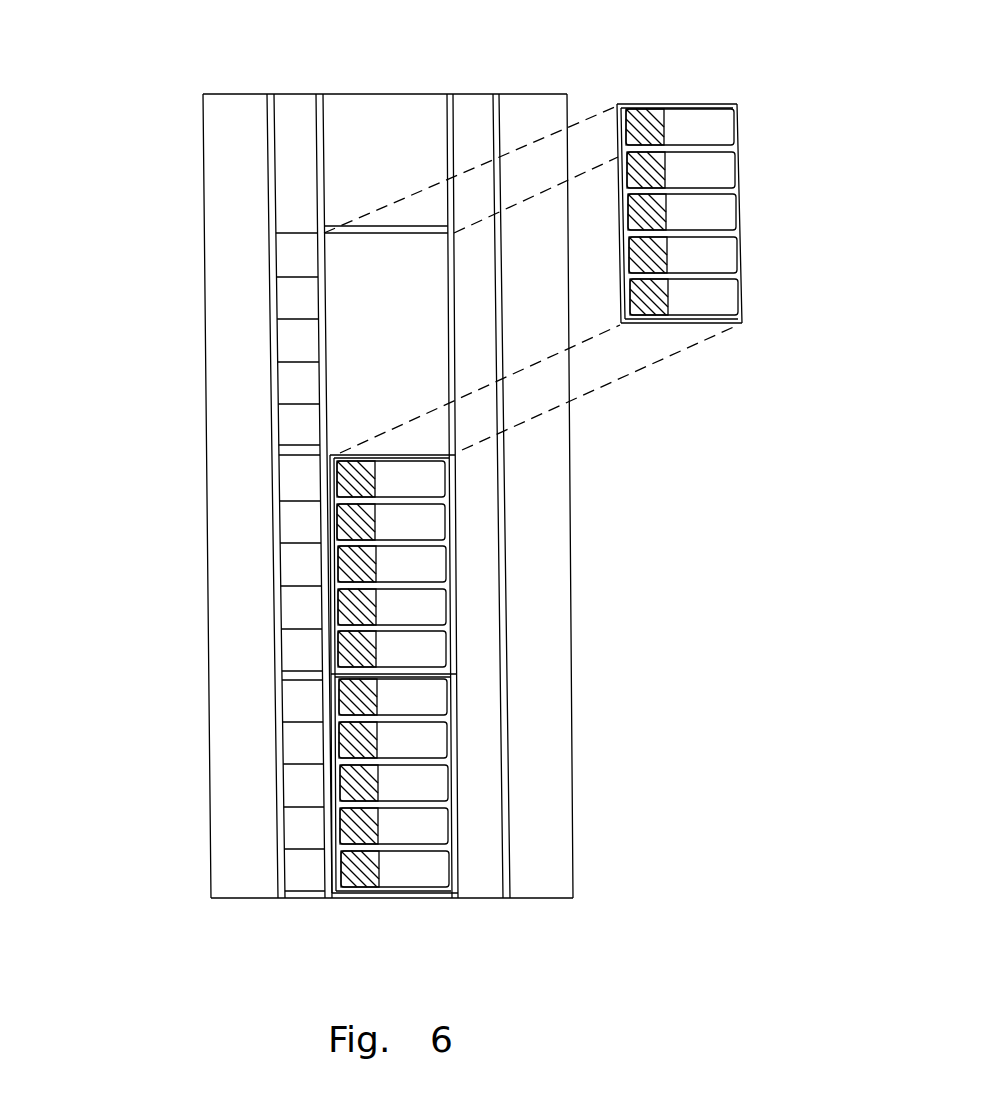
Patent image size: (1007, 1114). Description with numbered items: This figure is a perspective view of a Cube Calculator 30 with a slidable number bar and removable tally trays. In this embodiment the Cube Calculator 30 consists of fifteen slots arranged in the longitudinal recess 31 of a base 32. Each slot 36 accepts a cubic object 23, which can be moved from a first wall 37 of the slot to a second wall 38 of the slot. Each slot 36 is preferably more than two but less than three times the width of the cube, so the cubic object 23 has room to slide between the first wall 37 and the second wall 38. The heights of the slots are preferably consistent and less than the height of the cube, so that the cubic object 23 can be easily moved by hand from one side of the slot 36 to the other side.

The cubic object 23 is at (558, 491).
The Cube Calculator 30 is at (345, 496).
The longitudinal recess 31 is at (245, 496).
The base 32 is at (163, 483).
The slot 36 is at (606, 498).
The first wall 37 is at (490, 498).
The second wall 38 is at (603, 538).